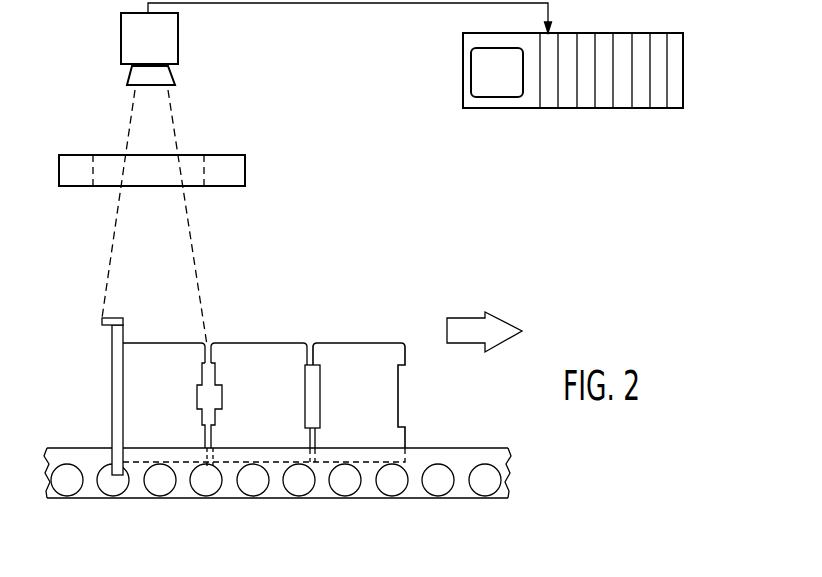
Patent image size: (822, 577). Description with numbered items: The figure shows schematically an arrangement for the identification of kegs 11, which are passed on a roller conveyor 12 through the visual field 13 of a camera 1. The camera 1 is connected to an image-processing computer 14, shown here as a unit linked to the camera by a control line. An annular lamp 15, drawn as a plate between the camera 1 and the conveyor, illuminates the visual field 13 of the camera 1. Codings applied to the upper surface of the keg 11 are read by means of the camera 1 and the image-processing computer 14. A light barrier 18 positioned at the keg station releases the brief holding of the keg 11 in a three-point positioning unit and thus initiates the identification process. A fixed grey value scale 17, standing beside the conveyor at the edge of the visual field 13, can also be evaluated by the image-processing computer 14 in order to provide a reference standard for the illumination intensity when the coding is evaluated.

The camera 1 is at (172, 33).
The keg 11 is at (382, 407).
The roller conveyor 12 is at (493, 520).
The visual field 13 is at (182, 262).
The image-processing computer 14 is at (533, 97).
The annular lamp 15 is at (222, 168).
The grey value scale 17 is at (112, 316).
The light barrier 18 is at (197, 397).